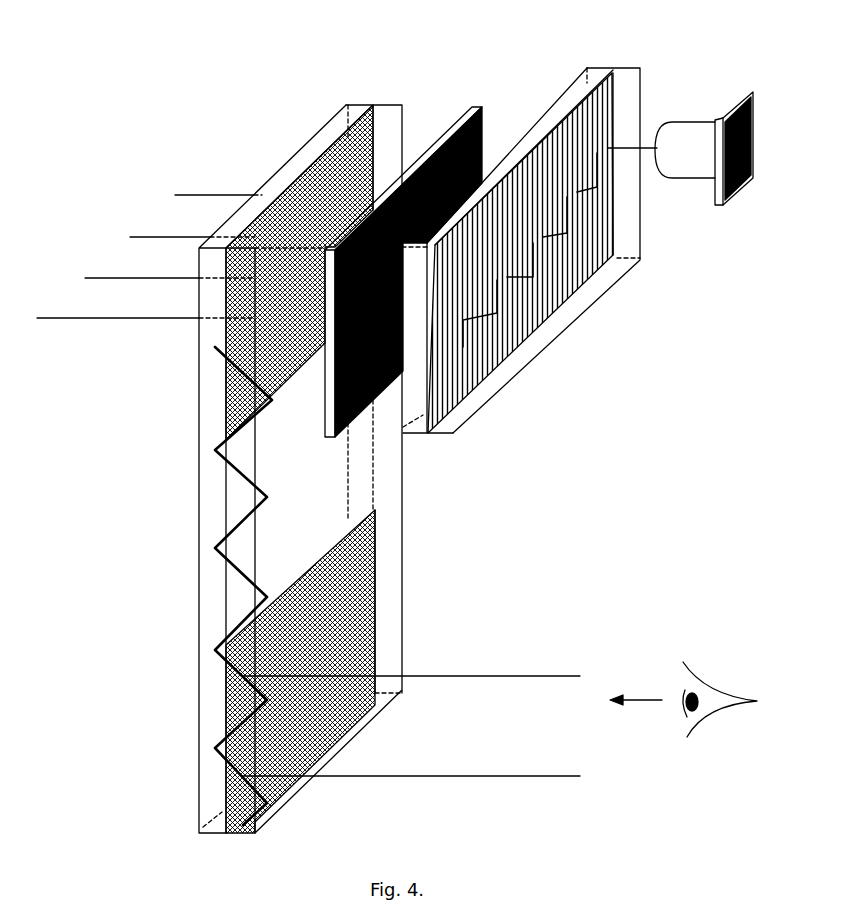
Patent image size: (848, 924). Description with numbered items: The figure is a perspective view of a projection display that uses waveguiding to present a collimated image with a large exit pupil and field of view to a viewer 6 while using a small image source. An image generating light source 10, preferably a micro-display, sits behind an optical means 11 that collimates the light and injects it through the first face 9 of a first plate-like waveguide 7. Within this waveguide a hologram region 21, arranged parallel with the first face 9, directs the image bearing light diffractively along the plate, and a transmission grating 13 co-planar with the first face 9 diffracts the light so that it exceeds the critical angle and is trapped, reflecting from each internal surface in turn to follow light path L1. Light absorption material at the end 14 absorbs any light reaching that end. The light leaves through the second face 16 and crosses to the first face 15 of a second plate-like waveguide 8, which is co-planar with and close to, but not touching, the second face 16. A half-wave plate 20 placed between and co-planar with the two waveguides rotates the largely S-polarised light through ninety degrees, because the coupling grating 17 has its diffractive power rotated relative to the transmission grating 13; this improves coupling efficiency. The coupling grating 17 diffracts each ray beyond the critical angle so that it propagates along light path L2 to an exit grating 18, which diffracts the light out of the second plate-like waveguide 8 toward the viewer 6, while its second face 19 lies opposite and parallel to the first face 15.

The viewer 6 is at (717, 698).
The first plate-like waveguide 7 is at (613, 70).
The second plate-like waveguide 8 is at (403, 653).
The first face 9 is at (597, 285).
The image generating light source 10 is at (752, 92).
The optical means 11 is at (680, 170).
The transmission grating 13 is at (573, 107).
The end 14 is at (413, 391).
The first face 15 is at (317, 497).
The second face 16 is at (528, 122).
The coupling grating 17 is at (327, 167).
The exit grating 18 is at (365, 622).
The second face 19 is at (199, 778).
The half-wave plate 20 is at (453, 130).
The hologram region 21 is at (610, 68).
The light path L1 is at (492, 320).
The light path L2 is at (262, 812).